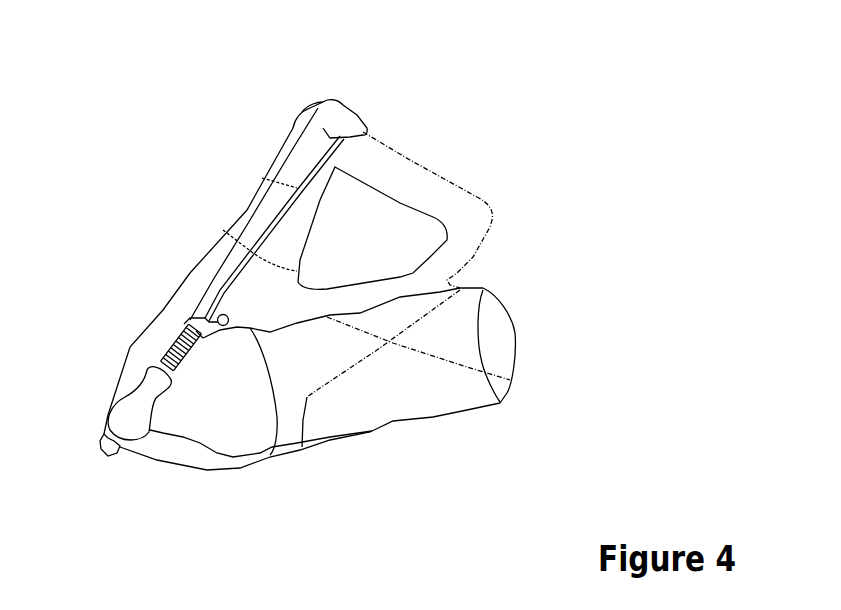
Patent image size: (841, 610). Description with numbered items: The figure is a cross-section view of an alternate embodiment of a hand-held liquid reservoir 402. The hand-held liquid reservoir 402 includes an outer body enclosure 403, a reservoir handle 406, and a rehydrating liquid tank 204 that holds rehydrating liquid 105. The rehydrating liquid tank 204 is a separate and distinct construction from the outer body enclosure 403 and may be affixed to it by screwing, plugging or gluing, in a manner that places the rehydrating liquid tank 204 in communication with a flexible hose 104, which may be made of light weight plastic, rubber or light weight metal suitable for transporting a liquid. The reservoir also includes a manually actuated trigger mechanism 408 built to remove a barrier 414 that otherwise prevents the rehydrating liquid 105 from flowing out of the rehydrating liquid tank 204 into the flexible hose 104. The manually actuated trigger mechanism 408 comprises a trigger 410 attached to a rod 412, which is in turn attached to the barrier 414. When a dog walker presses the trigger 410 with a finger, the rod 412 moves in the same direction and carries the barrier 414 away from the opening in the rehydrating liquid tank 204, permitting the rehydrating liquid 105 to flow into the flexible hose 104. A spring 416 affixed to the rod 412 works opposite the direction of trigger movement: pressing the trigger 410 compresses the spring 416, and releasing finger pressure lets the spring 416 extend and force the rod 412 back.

The hand-held liquid reservoir 402 is at (182, 56).
The outer body enclosure 403 is at (181, 265).
The manually actuated trigger mechanism 408 is at (352, 109).
The trigger 410 is at (306, 106).
The rod 412 is at (263, 197).
The reservoir handle 406 is at (486, 169).
The spring 416 is at (168, 335).
The barrier 414 is at (125, 404).
The flexible hose 104 is at (119, 451).
The rehydrating liquid 105 is at (414, 397).
The rehydrating liquid tank 204 is at (523, 329).